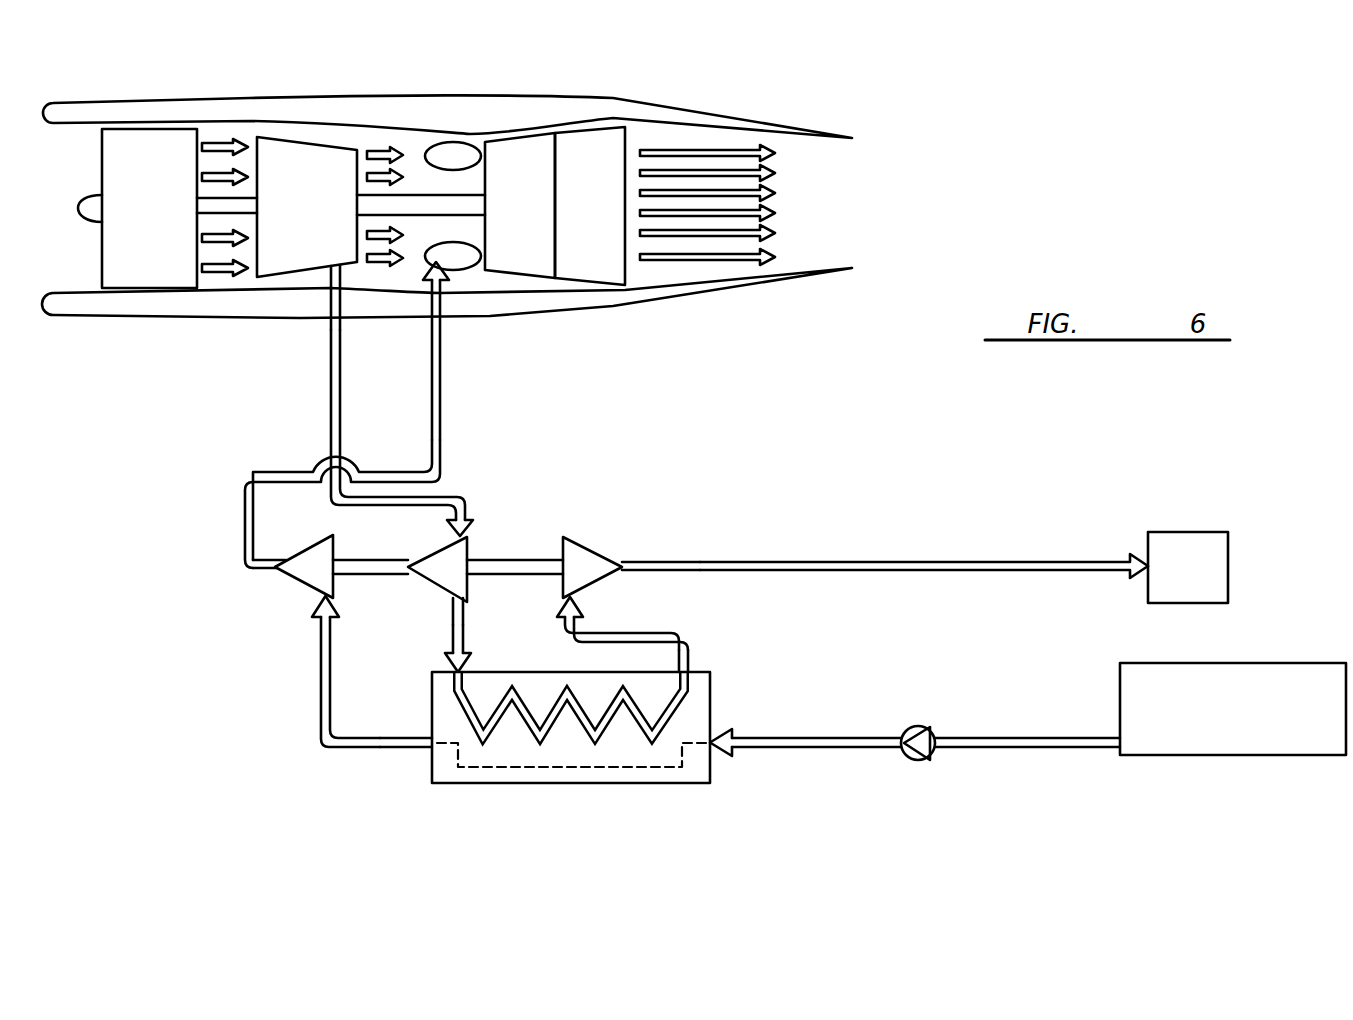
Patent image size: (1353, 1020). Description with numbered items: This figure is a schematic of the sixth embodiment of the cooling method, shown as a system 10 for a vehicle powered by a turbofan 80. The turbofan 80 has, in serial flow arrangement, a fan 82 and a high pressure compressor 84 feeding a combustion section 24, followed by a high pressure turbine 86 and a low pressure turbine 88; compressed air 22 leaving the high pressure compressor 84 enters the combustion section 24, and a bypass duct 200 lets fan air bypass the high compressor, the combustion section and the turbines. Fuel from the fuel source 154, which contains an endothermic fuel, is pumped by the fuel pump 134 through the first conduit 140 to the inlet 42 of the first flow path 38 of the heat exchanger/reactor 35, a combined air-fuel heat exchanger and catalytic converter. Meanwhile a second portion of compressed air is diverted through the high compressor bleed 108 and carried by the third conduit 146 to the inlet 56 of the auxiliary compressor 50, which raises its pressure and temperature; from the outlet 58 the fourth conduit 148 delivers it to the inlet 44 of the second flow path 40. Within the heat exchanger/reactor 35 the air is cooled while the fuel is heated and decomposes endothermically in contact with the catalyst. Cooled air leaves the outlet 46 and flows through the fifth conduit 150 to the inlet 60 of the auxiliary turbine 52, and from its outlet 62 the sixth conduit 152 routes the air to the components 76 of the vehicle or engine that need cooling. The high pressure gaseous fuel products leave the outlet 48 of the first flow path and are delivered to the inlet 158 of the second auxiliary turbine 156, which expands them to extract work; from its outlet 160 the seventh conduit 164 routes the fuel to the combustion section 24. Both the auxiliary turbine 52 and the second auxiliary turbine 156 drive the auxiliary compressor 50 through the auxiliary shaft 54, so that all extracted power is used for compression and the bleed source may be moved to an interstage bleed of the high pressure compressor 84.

The aircraft environmental cooling system 10 is at (1018, 802).
The compressor discharge air 22 is at (402, 168).
The combustion section 24 is at (460, 141).
The heat exchanger/reactor 35 is at (480, 783).
The first flow path 38 is at (653, 768).
The second flow path 40 is at (710, 708).
The inlet of the first flow path 42 is at (714, 750).
The inlet of the second flow path 44 is at (452, 668).
The outlet of the second flow path 46 is at (695, 672).
The outlet of the first flow path 48 is at (433, 750).
The auxiliary compressor 50 is at (443, 548).
The auxiliary turbine 52 is at (587, 543).
The auxiliary shaft 54 is at (377, 558).
The inlet of the auxiliary compressor 56 is at (470, 532).
The outlet of the auxiliary compressor 58 is at (448, 598).
The inlet of the auxiliary turbine 60 is at (588, 598).
The outlet of the auxiliary turbine 62 is at (624, 562).
The components of the vehicle or engine which need to be cooled 76 is at (1202, 532).
The turbofan 80 is at (620, 90).
The fan 82 is at (168, 137).
The high pressure compressor 84 is at (307, 150).
The high pressure turbine 86 is at (538, 212).
The low pressure turbine 88 is at (613, 212).
The high compressor bleed 108 is at (323, 297).
The fuel pump 134 is at (935, 730).
The first conduit 140 is at (822, 737).
The third conduit 146 is at (330, 378).
The fourth conduit 148 is at (464, 633).
The fifth conduit 150 is at (688, 647).
The sixth conduit 152 is at (838, 560).
The fuel source 154 is at (1178, 663).
The second auxiliary turbine 156 is at (297, 587).
The inlet of the second auxiliary turbine 158 is at (320, 607).
The outlet of the second auxiliary turbine 160 is at (274, 570).
The seventh conduit 164 is at (242, 502).
The bypass duct 200 is at (457, 285).